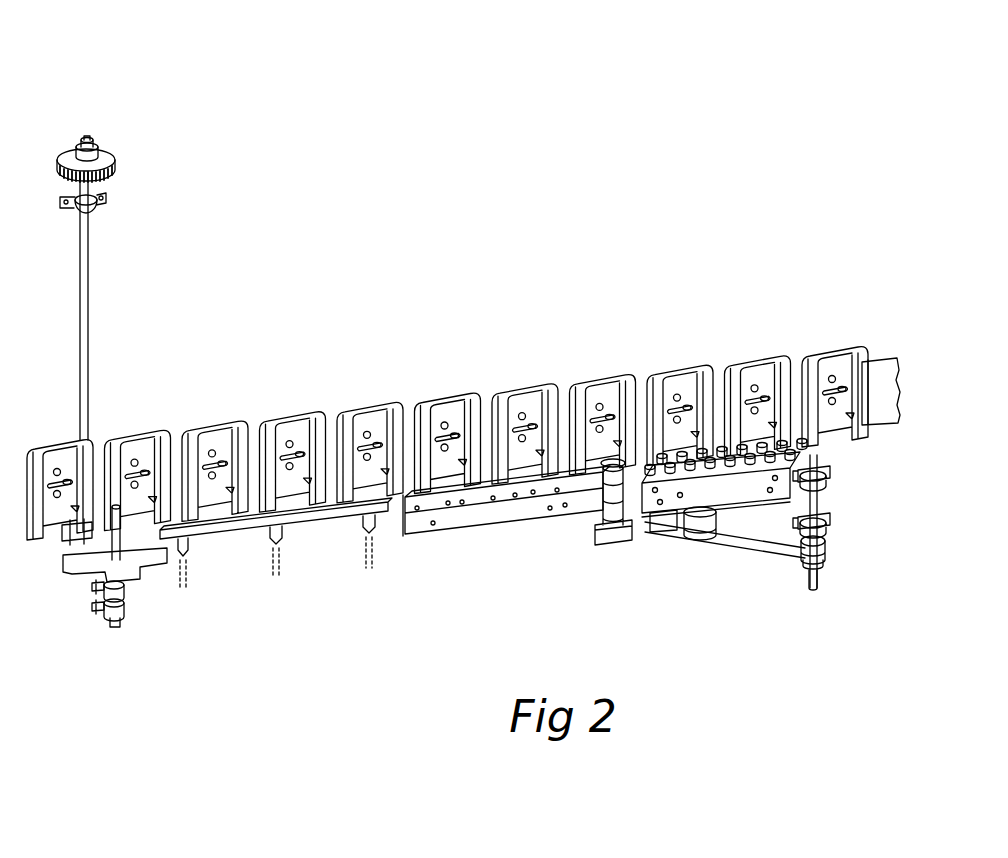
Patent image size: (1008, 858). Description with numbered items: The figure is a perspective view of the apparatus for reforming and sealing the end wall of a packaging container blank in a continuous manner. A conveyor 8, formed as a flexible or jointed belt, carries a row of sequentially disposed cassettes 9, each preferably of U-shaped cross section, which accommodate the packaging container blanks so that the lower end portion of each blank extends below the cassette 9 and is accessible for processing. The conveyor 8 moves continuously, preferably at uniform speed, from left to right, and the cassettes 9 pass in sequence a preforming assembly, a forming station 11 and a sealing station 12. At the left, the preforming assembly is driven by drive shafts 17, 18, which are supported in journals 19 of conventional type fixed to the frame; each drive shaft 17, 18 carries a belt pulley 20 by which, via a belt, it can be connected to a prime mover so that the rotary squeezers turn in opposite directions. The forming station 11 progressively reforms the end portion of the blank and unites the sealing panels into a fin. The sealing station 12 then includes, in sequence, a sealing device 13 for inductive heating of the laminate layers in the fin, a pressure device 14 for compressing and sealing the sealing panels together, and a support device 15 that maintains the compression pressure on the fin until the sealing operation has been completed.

The conveyor 8 is at (877, 371).
The cassette 9 is at (750, 372).
The forming station 11 is at (318, 577).
The sealing station 12 is at (447, 390).
The sealing device 13 is at (494, 546).
The pressure device 14 is at (625, 556).
The support device 15 is at (745, 560).
The drive shaft 17 is at (82, 302).
The drive shaft 18 is at (105, 552).
The journal 19 is at (94, 212).
The belt pulley 20 is at (104, 153).